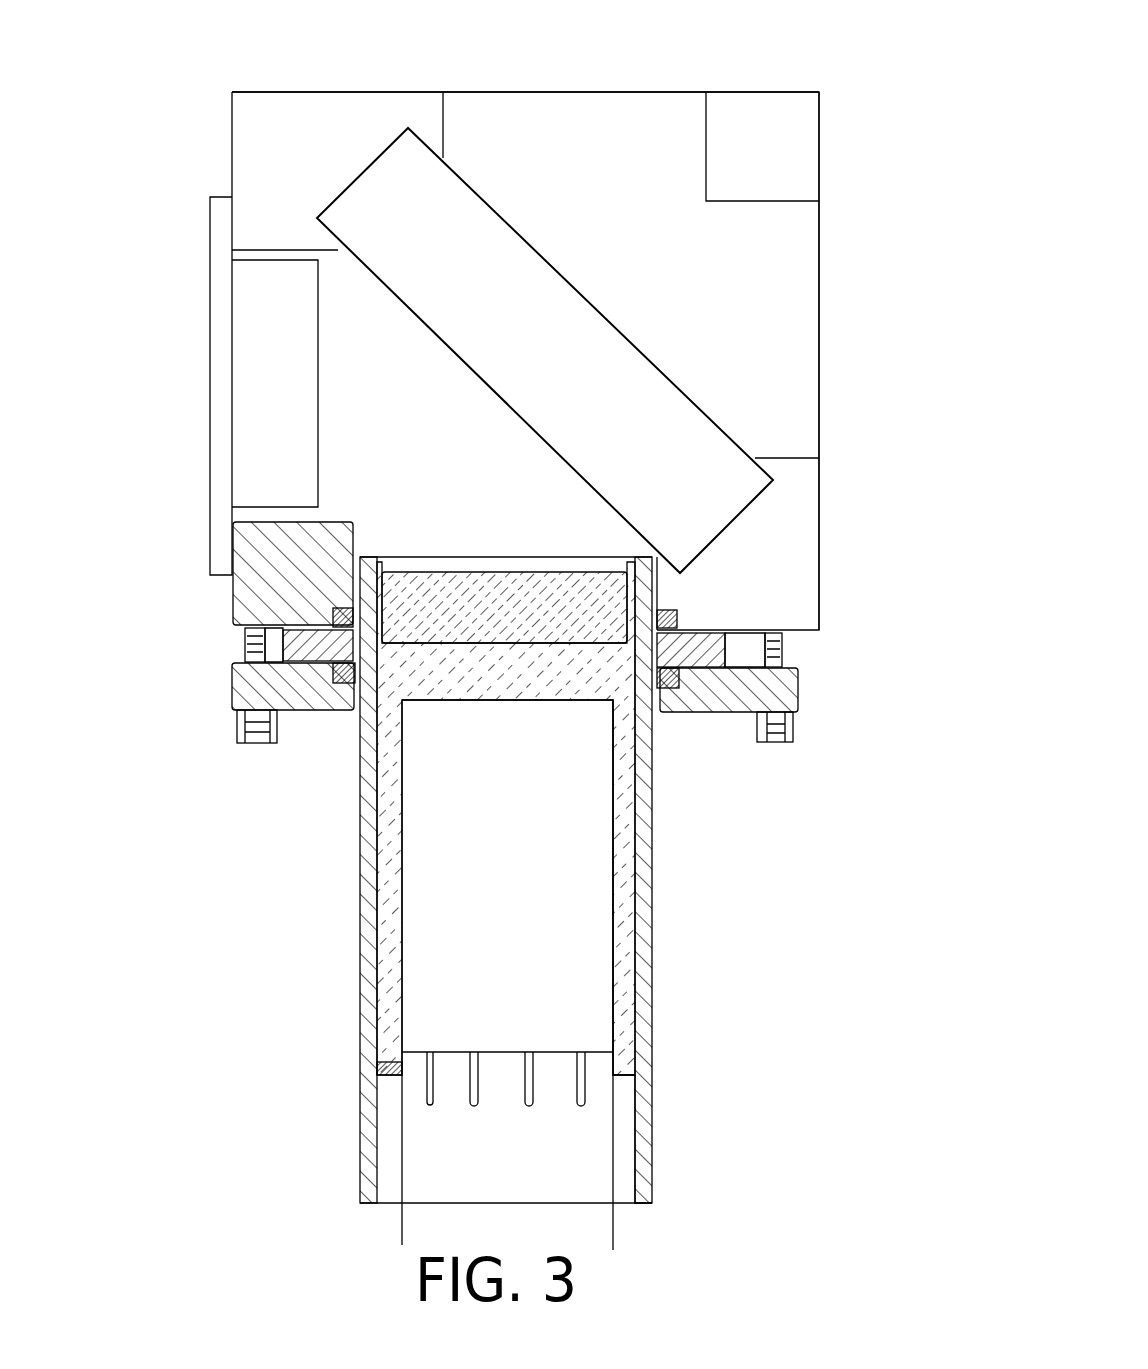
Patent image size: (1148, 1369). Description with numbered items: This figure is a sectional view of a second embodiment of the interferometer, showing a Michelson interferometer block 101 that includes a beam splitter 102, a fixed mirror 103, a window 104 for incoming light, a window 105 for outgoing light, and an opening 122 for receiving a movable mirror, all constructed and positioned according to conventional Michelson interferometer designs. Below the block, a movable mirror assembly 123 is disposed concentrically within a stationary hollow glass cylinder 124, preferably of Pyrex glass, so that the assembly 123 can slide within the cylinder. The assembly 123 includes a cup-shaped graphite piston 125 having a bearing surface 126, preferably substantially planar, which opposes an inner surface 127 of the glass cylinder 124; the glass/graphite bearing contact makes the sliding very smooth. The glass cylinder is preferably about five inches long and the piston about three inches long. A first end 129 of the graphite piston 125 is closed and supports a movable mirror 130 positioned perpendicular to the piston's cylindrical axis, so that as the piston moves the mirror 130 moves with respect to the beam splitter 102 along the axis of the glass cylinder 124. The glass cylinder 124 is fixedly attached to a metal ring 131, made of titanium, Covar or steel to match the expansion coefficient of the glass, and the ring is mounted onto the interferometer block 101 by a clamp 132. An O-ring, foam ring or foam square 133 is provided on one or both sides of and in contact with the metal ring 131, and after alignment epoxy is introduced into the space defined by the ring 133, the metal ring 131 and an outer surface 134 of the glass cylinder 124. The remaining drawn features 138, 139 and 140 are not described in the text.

The Michelson interferometer block 101 is at (840, 140).
The beam splitter 102 is at (592, 301).
The fixed mirror 103 is at (262, 314).
The window for incoming light 104 is at (622, 92).
The window for outgoing light 105 is at (824, 340).
The opening for receiving a movable mirror 122 is at (438, 517).
The movable mirror assembly 123 is at (450, 891).
The glass cylinder 124 is at (642, 1072).
The graphite piston 125 is at (627, 962).
The bearing surface 126 is at (377, 803).
The inner surface 127 is at (635, 1150).
The first end 129 is at (478, 643).
The movable mirror 130 is at (596, 585).
The metal ring 131 is at (280, 634).
The clamp 132 is at (218, 696).
The O-ring, foam ring or foam square 133 is at (333, 617).
The outer surface 134 is at (653, 845).
The seal at lower end of inner sleeve 138 is at (393, 1078).
The window 139 is at (400, 1185).
The grille 140 is at (423, 1060).